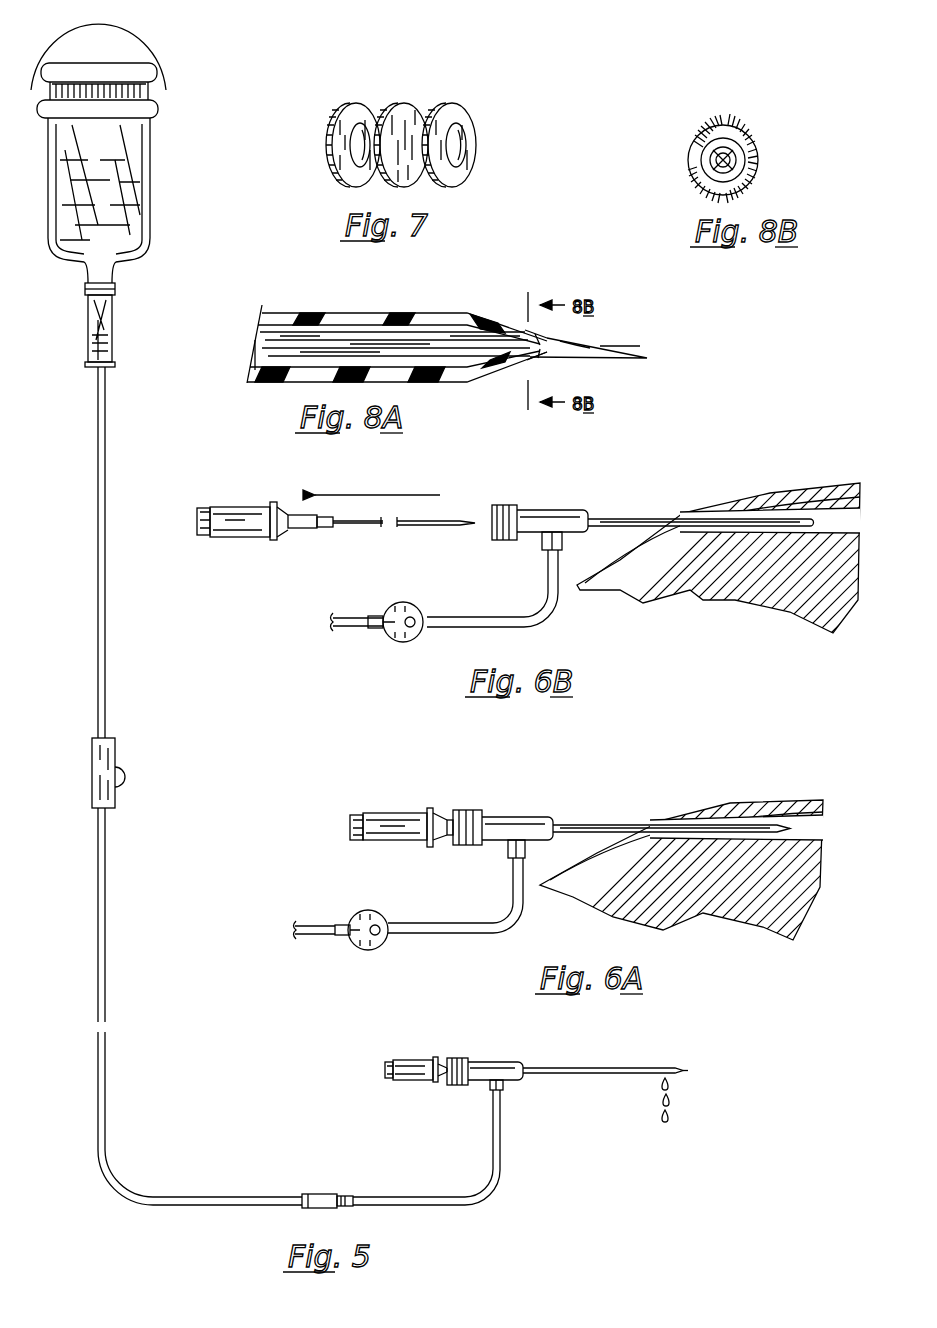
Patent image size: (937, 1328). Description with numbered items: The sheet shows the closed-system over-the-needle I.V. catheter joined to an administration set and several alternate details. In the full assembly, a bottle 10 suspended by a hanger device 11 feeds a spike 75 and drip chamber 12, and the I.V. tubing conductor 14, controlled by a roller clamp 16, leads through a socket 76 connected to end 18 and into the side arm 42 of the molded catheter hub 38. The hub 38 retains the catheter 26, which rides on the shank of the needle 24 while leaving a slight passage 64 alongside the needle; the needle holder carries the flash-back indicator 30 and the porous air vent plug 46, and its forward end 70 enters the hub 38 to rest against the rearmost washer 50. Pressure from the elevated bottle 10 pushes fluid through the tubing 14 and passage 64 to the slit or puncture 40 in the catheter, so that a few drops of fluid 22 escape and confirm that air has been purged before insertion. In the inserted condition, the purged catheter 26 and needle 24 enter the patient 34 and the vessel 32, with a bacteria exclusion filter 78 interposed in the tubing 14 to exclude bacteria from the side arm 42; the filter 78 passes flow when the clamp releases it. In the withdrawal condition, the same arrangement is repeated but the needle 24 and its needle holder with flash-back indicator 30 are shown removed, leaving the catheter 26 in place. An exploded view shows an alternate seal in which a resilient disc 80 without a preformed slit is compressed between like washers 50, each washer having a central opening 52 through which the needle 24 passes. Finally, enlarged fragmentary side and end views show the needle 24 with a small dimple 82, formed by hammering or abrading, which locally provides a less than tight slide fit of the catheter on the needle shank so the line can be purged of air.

In FIG. 5, the bottle 10 is at (148, 175).
In FIG. 5, the hanger device 11 is at (160, 82).
In FIG. 5, the drip chamber 12 is at (112, 342).
In FIG. 5, the I.V. tubing conductor 14 is at (105, 505).
In FIG. 6A, the I.V. tubing conductor 14 is at (425, 935).
In FIG. 5, the roller clamp 16 is at (115, 800).
In FIG. 5, the connector 18 is at (305, 1195).
In FIG. 5, the drops of fluid 22 is at (670, 1114).
In FIG. 8B, the needle 24 is at (708, 168).
In FIG. 8A, the needle 24 is at (605, 346).
In FIG. 6B, the needle 24 is at (412, 526).
In FIG. 5, the catheter 26 is at (575, 1068).
In FIG. 8B, the catheter 26 is at (740, 135).
In FIG. 8A, the catheter 26 is at (397, 346).
In FIG. 6B, the catheter 26 is at (640, 517).
In FIG. 6A, the catheter 26 is at (585, 824).
In FIG. 5, the flash-back indicator 30 is at (410, 1065).
In FIG. 6B, the flash-back indicator 30 is at (241, 510).
In FIG. 6A, the flash-back indicator 30 is at (395, 820).
In FIG. 6B, the vessel 32 is at (812, 495).
In FIG. 6A, the vessel 32 is at (778, 805).
In FIG. 6B, the patient 34 is at (720, 605).
In FIG. 6A, the patient 34 is at (725, 915).
In FIG. 5, the catheter hub 38 is at (488, 1062).
In FIG. 6B, the catheter hub 38 is at (534, 510).
In FIG. 6A, the catheter hub 38 is at (480, 812).
In FIG. 5, the slit or puncture 40 is at (660, 1058).
In FIG. 5, the side arm 42 is at (503, 1087).
In FIG. 6A, the side arm 42 is at (508, 855).
In FIG. 5, the porous air vent plug 46 is at (385, 1070).
In FIG. 6B, the porous air vent plug 46 is at (203, 506).
In FIG. 6A, the porous air vent plug 46 is at (350, 828).
In FIG. 7, the washers 50 is at (358, 102).
In FIG. 7, the ring aperture 52 is at (350, 140).
In FIG. 8B, the passage 64 is at (745, 156).
In FIG. 8A, the passage 64 is at (320, 375).
In FIG. 6B, the forward end of needle holder 70 is at (318, 530).
In FIG. 5, the spike 75 is at (85, 290).
In FIG. 5, the socket 76 is at (345, 1196).
In FIG. 6B, the bacteria exclusion filter 78 is at (398, 604).
In FIG. 6A, the bacteria exclusion filter 78 is at (368, 910).
In FIG. 7, the resilient disc 80 is at (414, 103).
In FIG. 8A, the dimple 82 is at (523, 360).